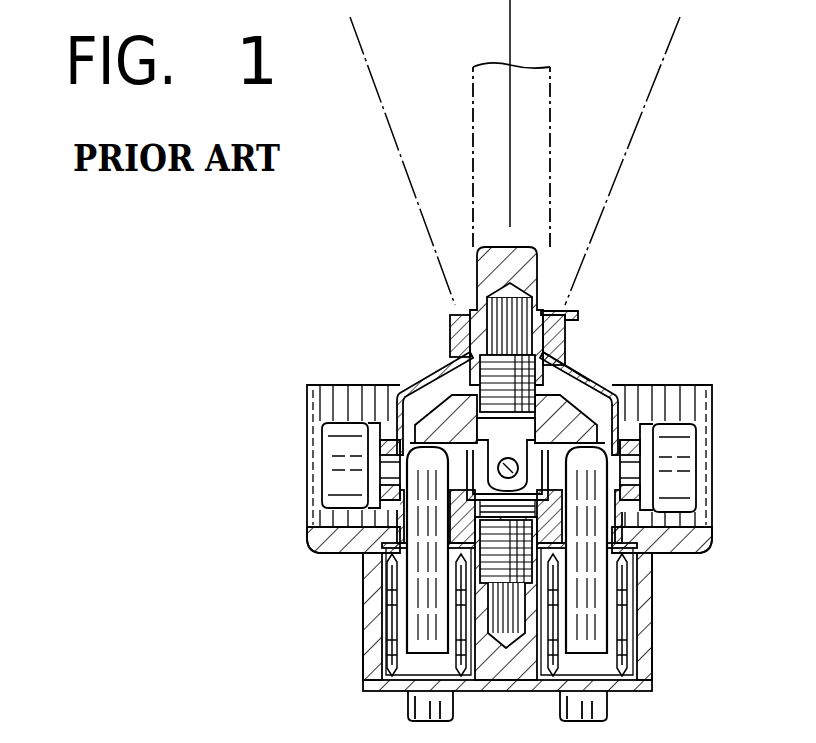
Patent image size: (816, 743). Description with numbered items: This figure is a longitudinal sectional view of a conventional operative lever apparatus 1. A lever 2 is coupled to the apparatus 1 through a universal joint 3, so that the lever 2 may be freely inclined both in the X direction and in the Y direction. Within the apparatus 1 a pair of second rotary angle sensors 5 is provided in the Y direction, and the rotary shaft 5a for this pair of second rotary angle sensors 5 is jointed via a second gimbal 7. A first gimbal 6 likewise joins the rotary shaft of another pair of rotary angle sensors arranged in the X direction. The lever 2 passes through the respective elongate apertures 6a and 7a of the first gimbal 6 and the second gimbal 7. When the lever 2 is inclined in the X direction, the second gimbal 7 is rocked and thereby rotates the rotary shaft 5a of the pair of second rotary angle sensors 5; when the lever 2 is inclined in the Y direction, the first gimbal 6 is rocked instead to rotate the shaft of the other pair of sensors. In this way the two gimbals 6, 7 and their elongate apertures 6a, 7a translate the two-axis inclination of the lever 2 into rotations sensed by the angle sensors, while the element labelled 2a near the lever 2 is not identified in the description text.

The apparatus 1 is at (653, 622).
The lever 2 is at (547, 190).
The ring 2a is at (450, 346).
The universal joint 3 is at (507, 456).
The second rotary angle sensors 5 is at (337, 438).
The rotary shaft 5a is at (621, 471).
The first gimbal 6 is at (566, 322).
The elongate aperture 6a is at (550, 315).
The second gimbal 7 is at (625, 398).
The elongate aperture 7a is at (578, 378).